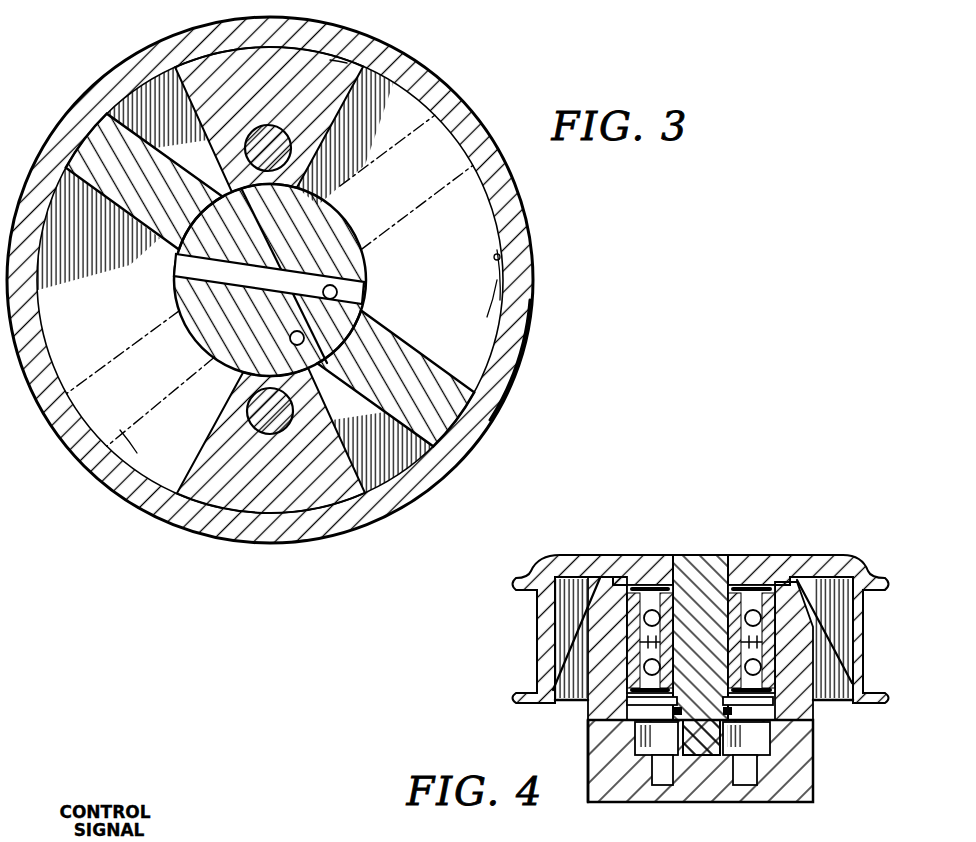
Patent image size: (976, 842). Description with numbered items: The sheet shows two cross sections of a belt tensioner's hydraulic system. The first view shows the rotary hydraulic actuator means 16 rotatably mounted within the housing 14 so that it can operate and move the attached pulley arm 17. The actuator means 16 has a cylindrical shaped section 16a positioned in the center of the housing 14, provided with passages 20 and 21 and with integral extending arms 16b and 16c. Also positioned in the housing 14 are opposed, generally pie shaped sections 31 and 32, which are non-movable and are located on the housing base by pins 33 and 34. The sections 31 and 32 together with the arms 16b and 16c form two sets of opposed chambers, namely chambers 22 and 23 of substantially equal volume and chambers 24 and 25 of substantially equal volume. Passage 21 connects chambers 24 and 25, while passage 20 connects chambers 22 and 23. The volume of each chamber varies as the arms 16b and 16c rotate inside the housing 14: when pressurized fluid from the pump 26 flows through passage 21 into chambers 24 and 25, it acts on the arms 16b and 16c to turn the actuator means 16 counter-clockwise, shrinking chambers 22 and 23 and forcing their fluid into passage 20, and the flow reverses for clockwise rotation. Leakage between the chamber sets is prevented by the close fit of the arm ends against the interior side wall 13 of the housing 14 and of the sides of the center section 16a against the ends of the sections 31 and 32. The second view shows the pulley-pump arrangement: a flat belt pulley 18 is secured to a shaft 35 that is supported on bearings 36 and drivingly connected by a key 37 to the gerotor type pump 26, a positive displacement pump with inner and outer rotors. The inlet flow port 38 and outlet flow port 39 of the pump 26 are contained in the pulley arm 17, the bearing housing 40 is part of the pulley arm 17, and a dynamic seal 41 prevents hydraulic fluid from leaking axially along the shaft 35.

In FIG. 3, the side wall 13 is at (507, 193).
In FIG. 3, the housing 14 is at (523, 350).
In FIG. 3, the hydraulic actuator means 16 is at (288, 264).
In FIG. 3, the cylindrical shaped section 16a is at (333, 320).
In FIG. 3, the extending arm 16b is at (457, 407).
In FIG. 3, the extending arm 16c is at (110, 147).
In FIG. 4, the pulley arm 17 is at (588, 757).
In FIG. 3, the flat belt pulley 18 is at (500, 257).
In FIG. 4, the flat belt pulley 18 is at (863, 573).
In FIG. 3, the passage 20 is at (180, 270).
In FIG. 3, the passage 21 is at (233, 203).
In FIG. 3, the chamber 22 is at (487, 317).
In FIG. 3, the chamber 23 is at (137, 453).
In FIG. 3, the chamber 24 is at (407, 457).
In FIG. 3, the chamber 25 is at (167, 94).
In FIG. 4, the pump 26 is at (773, 740).
In FIG. 3, the pie shaped section 31 is at (347, 63).
In FIG. 3, the pie shaped section 32 is at (308, 540).
In FIG. 3, the pin 33 is at (250, 406).
In FIG. 3, the pin 34 is at (270, 128).
In FIG. 4, the shaft 35 is at (718, 563).
In FIG. 4, the bearings 36 is at (633, 620).
In FIG. 4, the key 37 is at (700, 758).
In FIG. 4, the inlet flow port 38 is at (742, 773).
In FIG. 4, the outlet flow port 39 is at (655, 775).
In FIG. 4, the bearing housing 40 is at (597, 663).
In FIG. 4, the dynamic seal 41 is at (677, 712).